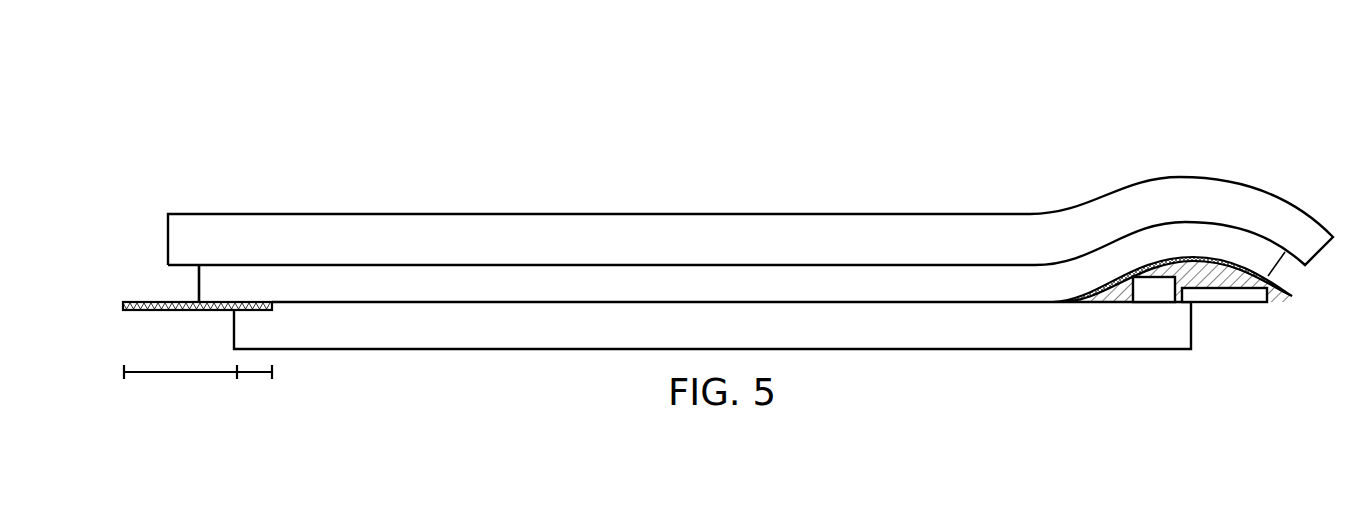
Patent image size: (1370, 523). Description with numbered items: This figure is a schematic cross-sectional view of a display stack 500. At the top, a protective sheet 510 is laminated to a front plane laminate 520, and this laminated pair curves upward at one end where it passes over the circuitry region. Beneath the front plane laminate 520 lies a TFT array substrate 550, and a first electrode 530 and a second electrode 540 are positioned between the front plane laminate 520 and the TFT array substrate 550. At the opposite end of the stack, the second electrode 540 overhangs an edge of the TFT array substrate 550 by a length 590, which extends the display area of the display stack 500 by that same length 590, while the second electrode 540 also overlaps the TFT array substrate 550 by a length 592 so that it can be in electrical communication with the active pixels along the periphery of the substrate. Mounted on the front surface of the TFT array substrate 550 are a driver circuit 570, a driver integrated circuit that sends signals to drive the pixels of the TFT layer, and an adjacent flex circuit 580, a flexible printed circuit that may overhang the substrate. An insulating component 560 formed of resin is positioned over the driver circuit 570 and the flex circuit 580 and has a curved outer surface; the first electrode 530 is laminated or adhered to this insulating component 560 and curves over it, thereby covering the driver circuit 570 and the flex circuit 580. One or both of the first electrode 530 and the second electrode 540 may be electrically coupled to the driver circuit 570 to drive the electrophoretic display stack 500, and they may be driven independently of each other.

The display stack 500 is at (1245, 95).
The protective sheet 510 is at (1268, 193).
The front plane laminate 520 is at (730, 285).
The first electrode 530 is at (1092, 282).
The second electrode 540 is at (213, 302).
The TFT array substrate 550 is at (963, 332).
The insulating component 560 is at (1187, 270).
The driver circuit 570 is at (1158, 292).
The flex circuit 580 is at (1238, 297).
The length 590 is at (168, 372).
The length 592 is at (237, 372).